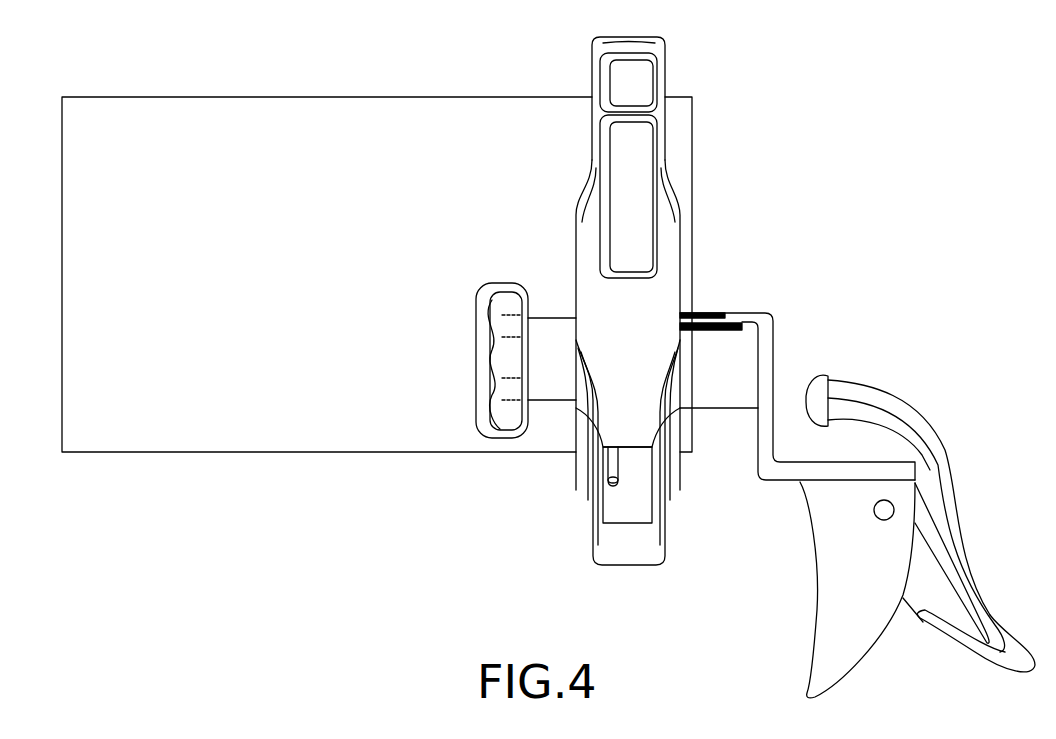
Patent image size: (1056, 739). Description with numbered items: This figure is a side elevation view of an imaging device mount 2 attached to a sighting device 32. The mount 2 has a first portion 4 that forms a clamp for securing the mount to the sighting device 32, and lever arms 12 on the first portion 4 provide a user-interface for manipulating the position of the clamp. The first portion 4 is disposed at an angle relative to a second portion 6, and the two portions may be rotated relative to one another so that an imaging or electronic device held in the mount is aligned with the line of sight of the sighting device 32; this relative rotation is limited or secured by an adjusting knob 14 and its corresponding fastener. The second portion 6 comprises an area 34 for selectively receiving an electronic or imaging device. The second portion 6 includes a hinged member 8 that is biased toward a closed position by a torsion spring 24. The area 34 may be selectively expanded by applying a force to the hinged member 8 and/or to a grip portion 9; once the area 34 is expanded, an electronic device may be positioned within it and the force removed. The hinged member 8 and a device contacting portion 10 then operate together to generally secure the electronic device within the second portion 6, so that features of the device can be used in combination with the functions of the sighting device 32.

The imaging device mount 2 is at (757, 282).
The first portion 4 is at (660, 45).
The second portion 6 is at (891, 342).
The hinged member 8 is at (1010, 650).
The grip portion 9 is at (828, 648).
The device contacting portion 10 is at (820, 393).
The lever arms 12 is at (608, 442).
The adjusting knob 14 is at (478, 405).
The torsion spring 24 is at (950, 587).
The sighting device 32 is at (273, 115).
The area 34 is at (790, 405).